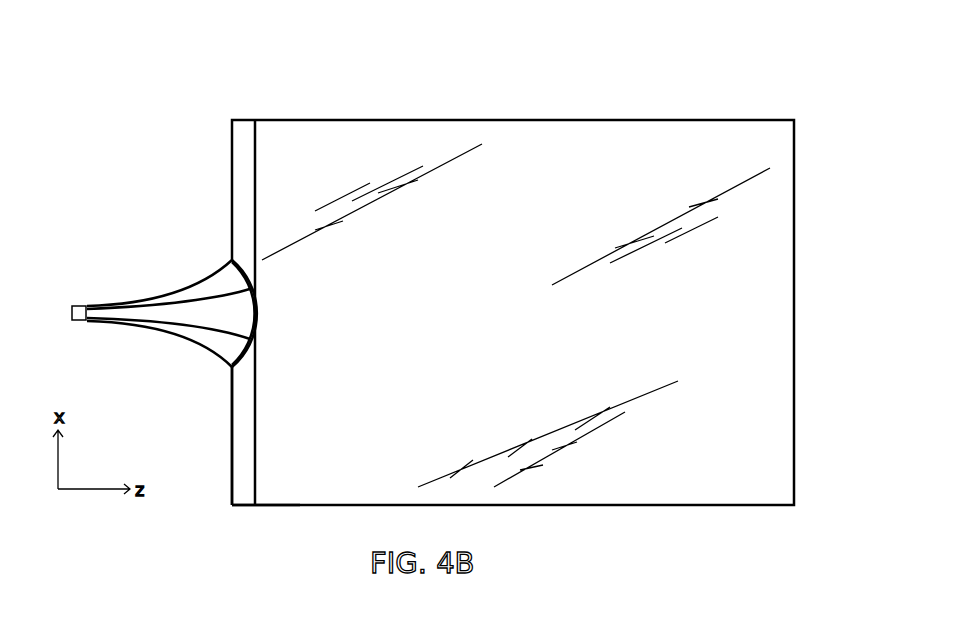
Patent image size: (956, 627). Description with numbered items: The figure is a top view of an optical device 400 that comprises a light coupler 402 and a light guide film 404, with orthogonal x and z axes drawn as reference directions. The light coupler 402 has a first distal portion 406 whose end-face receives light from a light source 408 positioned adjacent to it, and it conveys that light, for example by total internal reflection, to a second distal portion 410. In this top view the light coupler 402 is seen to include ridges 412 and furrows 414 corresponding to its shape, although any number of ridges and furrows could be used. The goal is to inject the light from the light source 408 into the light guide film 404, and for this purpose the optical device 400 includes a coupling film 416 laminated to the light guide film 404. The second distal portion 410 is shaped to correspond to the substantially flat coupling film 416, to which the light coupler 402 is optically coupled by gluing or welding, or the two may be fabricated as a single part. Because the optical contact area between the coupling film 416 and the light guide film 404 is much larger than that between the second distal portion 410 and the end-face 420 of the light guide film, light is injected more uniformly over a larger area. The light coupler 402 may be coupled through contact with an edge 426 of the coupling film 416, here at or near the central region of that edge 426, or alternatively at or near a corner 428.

The optical device 400 is at (434, 291).
The light coupler 402 is at (142, 330).
The light guide film 404 is at (548, 228).
The first distal portion 406 is at (85, 321).
The light source 408 is at (77, 306).
The second distal portion 410 is at (240, 340).
The ridges 412 is at (158, 303).
The furrows 414 is at (218, 315).
The coupling film 416 is at (243, 120).
The end-face 420 is at (255, 187).
The edge 426 is at (232, 378).
The corner 428 is at (232, 505).